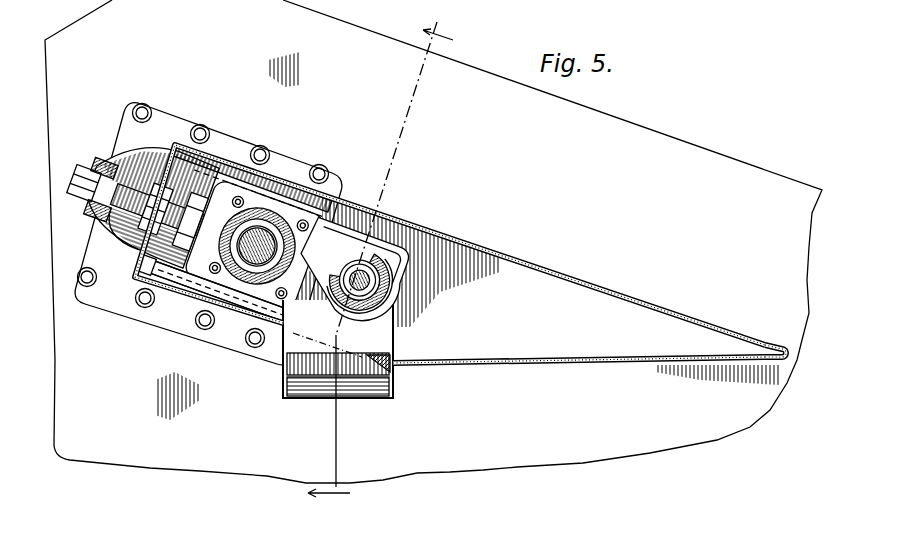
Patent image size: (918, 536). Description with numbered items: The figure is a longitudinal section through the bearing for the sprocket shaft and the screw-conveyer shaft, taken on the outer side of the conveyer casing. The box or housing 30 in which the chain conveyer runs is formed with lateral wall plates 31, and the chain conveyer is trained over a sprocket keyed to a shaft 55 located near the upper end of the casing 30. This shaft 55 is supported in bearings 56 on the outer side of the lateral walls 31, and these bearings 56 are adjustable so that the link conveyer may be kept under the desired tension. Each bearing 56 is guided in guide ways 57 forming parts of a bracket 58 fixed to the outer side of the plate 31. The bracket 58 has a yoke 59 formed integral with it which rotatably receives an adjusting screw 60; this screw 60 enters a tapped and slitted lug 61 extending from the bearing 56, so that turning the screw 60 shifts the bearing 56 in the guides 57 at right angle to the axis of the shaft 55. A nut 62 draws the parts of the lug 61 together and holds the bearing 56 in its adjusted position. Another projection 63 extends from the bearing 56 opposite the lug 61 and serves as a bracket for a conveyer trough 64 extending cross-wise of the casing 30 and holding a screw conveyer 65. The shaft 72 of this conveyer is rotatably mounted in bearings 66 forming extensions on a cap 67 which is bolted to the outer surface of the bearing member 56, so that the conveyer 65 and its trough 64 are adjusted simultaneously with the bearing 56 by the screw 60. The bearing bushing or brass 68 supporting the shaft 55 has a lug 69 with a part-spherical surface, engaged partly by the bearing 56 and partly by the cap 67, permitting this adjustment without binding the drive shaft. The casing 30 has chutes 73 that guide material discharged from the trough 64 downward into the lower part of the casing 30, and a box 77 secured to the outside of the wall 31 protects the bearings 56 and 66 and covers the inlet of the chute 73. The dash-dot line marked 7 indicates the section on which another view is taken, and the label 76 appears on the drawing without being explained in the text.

The section line 7- 7 is at (380, 267).
The box or housing 30 is at (751, 154).
The lateral wall plates 31 is at (792, 332).
The shaft 55 is at (305, 152).
The bearings 56 is at (265, 165).
The guide ways 57 is at (200, 163).
The bracket 58 is at (150, 290).
The yoke 59 is at (113, 167).
The adjusting screw 60 is at (107, 200).
The tapped and slitted lug 61 is at (133, 213).
The nut 62 is at (133, 280).
The projection 63 is at (409, 250).
The conveyer trough 64 is at (386, 303).
The screw conveyer 65 is at (383, 313).
The bearings 66 is at (296, 303).
The cap 67 is at (315, 210).
The bearing bushing or brass 68 is at (172, 292).
The lug 69 is at (236, 312).
The shaft 72 is at (364, 270).
The chutes 73 is at (394, 343).
The cylinder body 76 is at (230, 160).
The box 77 is at (557, 362).